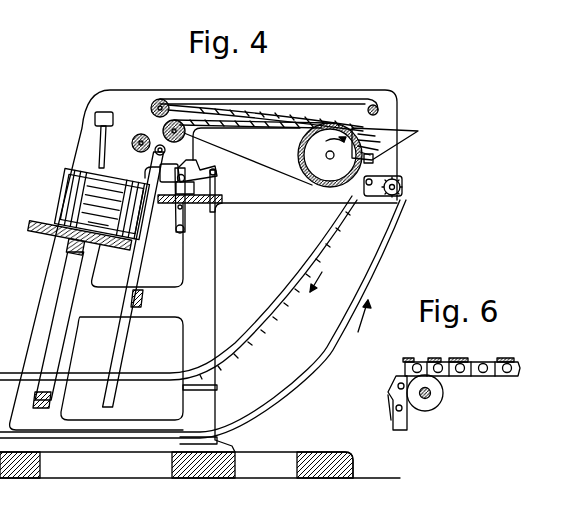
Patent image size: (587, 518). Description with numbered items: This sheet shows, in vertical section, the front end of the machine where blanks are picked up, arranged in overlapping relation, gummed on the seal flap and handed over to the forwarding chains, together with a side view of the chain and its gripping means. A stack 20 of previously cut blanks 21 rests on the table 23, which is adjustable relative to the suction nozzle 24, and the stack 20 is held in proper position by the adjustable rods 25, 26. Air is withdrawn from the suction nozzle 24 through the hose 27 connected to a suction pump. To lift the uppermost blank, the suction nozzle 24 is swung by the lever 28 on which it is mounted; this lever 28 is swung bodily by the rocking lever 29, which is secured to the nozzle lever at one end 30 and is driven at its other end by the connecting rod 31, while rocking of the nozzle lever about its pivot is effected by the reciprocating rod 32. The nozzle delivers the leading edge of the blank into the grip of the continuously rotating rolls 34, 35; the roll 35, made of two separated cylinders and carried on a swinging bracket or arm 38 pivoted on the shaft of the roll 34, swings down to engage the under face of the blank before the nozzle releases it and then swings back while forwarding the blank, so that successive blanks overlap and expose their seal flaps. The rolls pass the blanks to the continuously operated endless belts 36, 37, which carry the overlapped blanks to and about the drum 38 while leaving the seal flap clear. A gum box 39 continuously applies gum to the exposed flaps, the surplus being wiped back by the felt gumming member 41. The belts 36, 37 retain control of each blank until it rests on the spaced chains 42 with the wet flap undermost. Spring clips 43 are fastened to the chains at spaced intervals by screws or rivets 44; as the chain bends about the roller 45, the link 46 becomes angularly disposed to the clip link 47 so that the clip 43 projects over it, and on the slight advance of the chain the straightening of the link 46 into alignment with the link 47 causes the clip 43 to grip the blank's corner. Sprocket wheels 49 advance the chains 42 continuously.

In FIG. 4, the stack 20 is at (66, 186).
In FIG. 4, the blanks 21 is at (322, 118).
In FIG. 4, the table 23 is at (44, 233).
In FIG. 4, the suction nozzle 24 is at (145, 174).
In FIG. 4, the adjustable rod 25 is at (140, 272).
In FIG. 4, the adjustable rod 26 is at (98, 156).
In FIG. 4, the hose 27 is at (206, 160).
In FIG. 4, the lever 28 is at (214, 168).
In FIG. 4, the rocking lever 29 is at (186, 218).
In FIG. 4, the end 30 is at (186, 190).
In FIG. 4, the connecting rod 31 is at (187, 231).
In FIG. 4, the reciprocating rod 32 is at (218, 188).
In FIG. 4, the roll 34 is at (133, 148).
In FIG. 4, the roll 35 is at (172, 151).
In FIG. 4, the endless belt 36 is at (292, 99).
In FIG. 4, the endless belt 37 is at (287, 122).
In FIG. 4, the drum 38 is at (300, 164).
In FIG. 4, the gum box 39 is at (413, 140).
In FIG. 4, the felt gumming member 41 is at (372, 158).
In FIG. 4, the chains 42 is at (266, 330).
In FIG. 4, the spring clip 43 is at (400, 182).
In FIG. 6, the spring clip 43 is at (408, 360).
In FIG. 6, the screws or rivets 44 is at (421, 361).
In FIG. 4, the roller 45 is at (369, 186).
In FIG. 6, the roller 45 is at (436, 405).
In FIG. 6, the link 46 is at (405, 369).
In FIG. 6, the clip link 47 is at (438, 363).
In FIG. 4, the sprocket wheel 49 is at (402, 196).